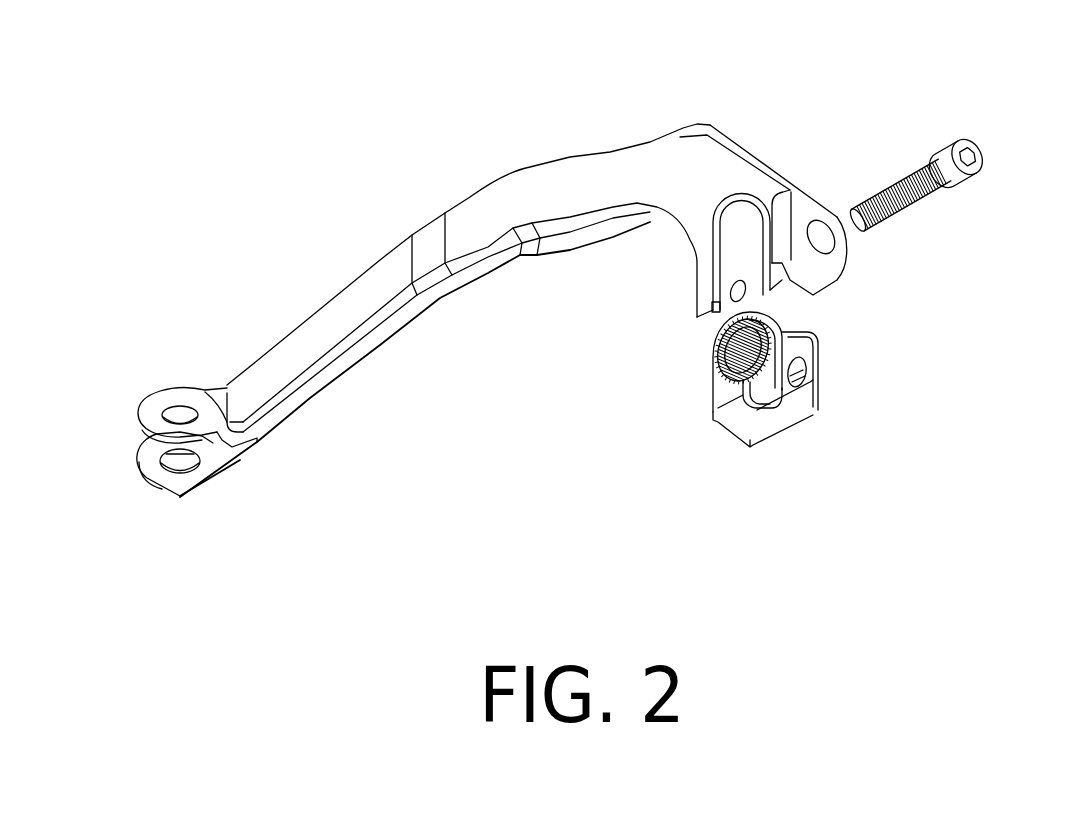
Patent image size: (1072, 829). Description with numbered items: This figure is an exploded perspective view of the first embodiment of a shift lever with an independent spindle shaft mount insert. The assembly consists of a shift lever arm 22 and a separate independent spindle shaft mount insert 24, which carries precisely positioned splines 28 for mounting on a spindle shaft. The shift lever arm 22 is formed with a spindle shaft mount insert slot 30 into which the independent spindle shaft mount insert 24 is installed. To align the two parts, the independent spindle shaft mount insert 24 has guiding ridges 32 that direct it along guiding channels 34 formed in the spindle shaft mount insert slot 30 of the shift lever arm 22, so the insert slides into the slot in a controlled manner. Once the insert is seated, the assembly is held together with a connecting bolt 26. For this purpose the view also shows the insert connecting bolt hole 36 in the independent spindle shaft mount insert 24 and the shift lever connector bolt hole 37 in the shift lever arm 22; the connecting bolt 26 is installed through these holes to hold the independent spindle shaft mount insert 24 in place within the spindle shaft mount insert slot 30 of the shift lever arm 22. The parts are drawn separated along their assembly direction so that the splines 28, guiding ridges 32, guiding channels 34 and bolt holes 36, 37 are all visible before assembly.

The shift lever arm 22 is at (563, 180).
The independent spindle shaft mount insert 24 is at (760, 370).
The connecting bolt 26 is at (947, 140).
The splines 28 is at (718, 348).
The spindle shaft mount insert slot 30 is at (760, 213).
The guiding ridges 32 is at (818, 340).
The guiding channels 34 is at (778, 264).
The insert connecting bolt hole 36 is at (793, 387).
The shift lever connector bolt hole 37 is at (713, 305).